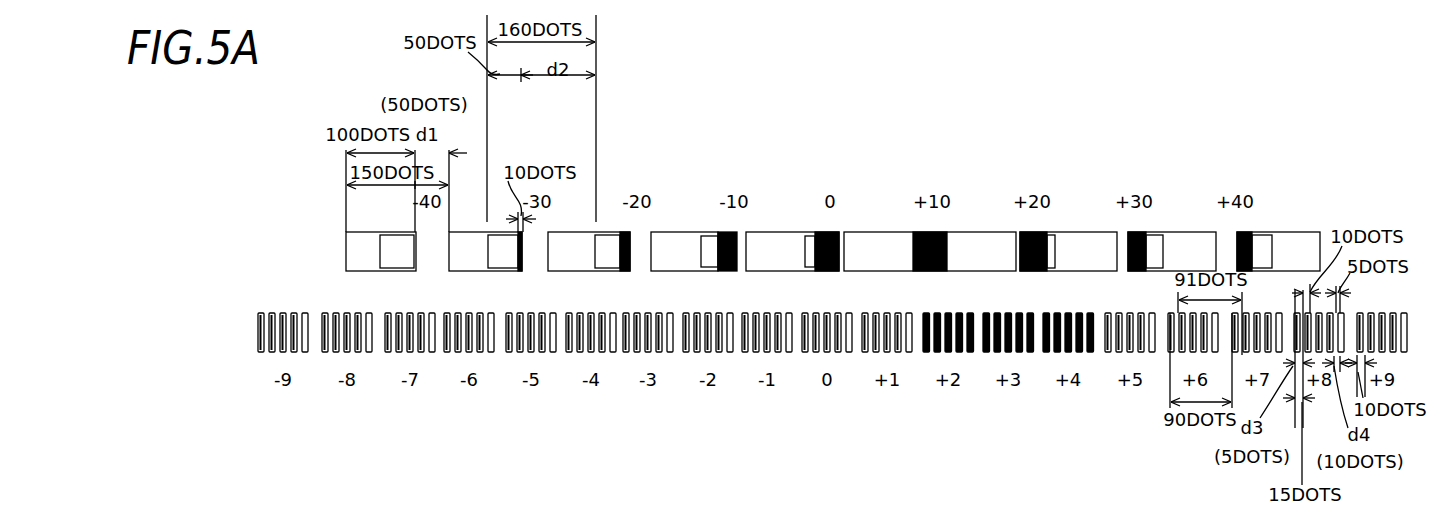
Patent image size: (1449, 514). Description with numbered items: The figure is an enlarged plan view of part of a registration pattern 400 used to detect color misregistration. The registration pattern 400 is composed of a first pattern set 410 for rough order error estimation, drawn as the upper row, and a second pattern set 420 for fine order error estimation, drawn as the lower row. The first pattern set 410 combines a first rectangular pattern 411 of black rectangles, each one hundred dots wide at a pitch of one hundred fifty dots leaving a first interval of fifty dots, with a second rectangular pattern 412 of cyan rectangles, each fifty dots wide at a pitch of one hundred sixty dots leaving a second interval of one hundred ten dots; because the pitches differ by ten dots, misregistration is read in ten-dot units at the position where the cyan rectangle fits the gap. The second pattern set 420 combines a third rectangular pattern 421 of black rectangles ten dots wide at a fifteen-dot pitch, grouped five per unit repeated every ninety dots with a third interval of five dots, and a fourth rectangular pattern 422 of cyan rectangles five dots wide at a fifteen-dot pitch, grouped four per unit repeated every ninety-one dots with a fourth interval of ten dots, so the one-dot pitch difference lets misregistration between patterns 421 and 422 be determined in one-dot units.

The registration pattern 400 is at (192, 230).
The first pattern set 410 is at (330, 253).
The first rectangular pattern 411 is at (663, 235).
The second rectangular pattern 412 is at (732, 233).
The second pattern set 420 is at (250, 329).
The third rectangular pattern 421 is at (745, 354).
The fourth rectangular pattern 422 is at (780, 354).